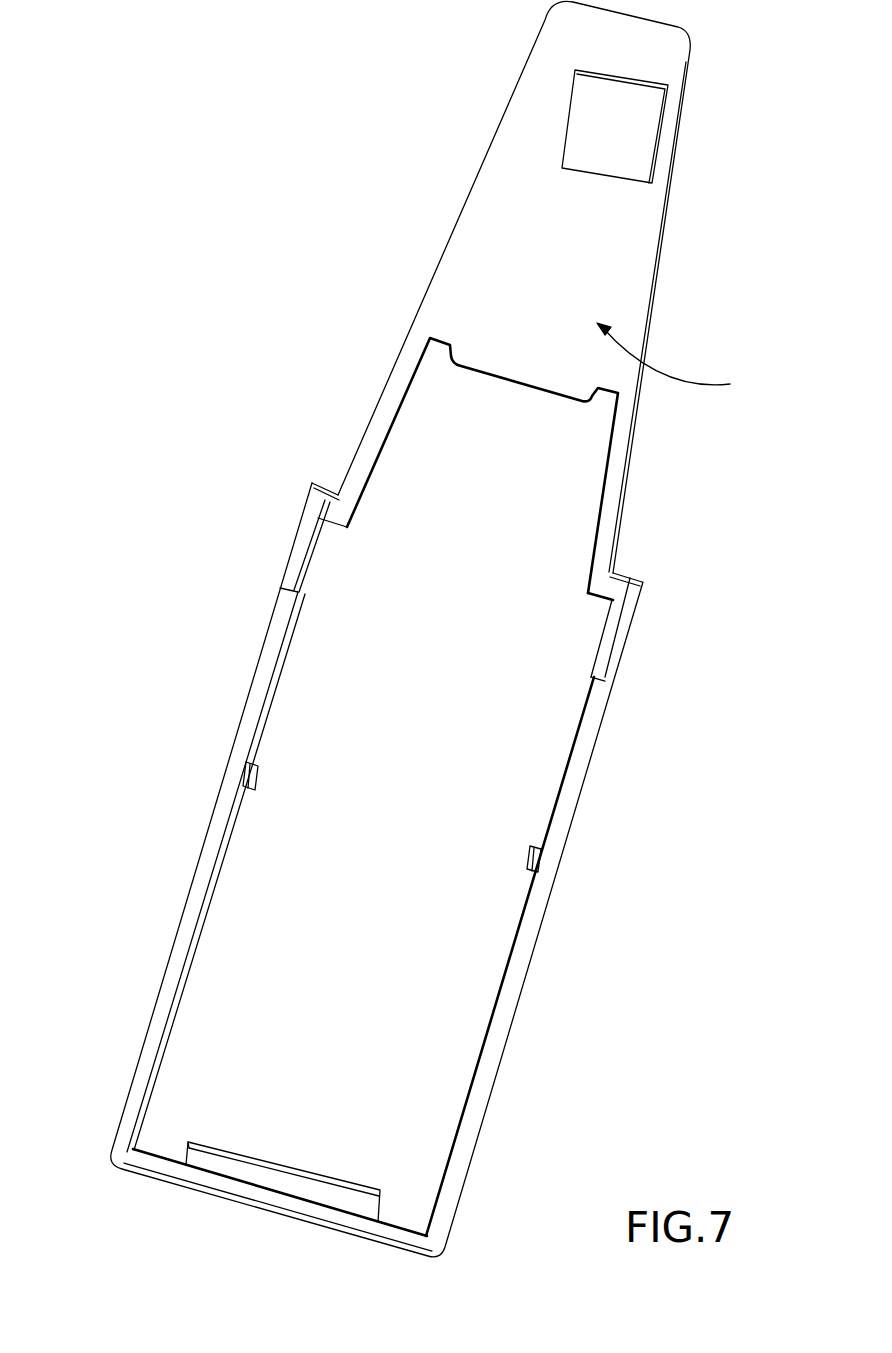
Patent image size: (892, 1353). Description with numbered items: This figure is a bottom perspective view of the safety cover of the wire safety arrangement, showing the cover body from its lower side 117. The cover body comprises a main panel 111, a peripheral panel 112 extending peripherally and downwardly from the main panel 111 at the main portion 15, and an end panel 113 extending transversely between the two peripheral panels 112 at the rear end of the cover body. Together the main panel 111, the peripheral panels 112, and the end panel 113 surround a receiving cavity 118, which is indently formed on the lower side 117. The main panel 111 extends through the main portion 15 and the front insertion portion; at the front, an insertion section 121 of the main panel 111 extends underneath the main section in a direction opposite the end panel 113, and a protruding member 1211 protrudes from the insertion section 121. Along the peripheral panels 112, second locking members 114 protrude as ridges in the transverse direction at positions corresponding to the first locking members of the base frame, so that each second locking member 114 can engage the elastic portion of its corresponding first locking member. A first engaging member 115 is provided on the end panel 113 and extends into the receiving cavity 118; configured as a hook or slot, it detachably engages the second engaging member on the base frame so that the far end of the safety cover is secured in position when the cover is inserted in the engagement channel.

The main portion 15 is at (482, 1087).
The main panel 111 is at (470, 990).
The peripheral panel 112 is at (186, 914).
The end panel 113 is at (243, 1198).
The second locking member 114 is at (248, 770).
The first engaging member 115 is at (312, 1188).
The lower side 117 is at (687, 361).
The receiving cavity 118 is at (469, 732).
The insertion section 121 is at (628, 298).
The protruding member 1211 is at (625, 120).